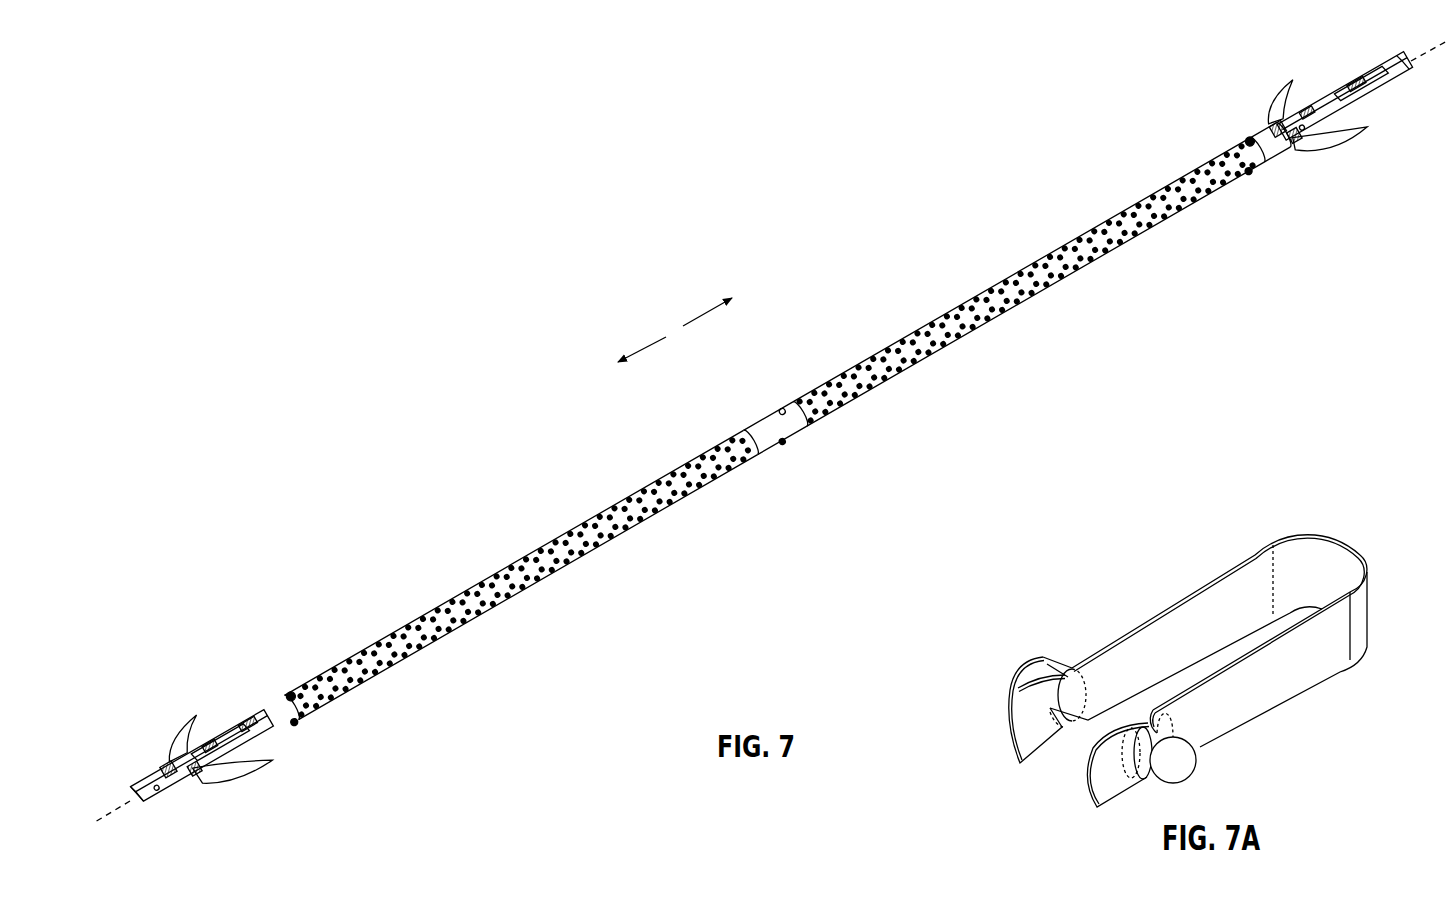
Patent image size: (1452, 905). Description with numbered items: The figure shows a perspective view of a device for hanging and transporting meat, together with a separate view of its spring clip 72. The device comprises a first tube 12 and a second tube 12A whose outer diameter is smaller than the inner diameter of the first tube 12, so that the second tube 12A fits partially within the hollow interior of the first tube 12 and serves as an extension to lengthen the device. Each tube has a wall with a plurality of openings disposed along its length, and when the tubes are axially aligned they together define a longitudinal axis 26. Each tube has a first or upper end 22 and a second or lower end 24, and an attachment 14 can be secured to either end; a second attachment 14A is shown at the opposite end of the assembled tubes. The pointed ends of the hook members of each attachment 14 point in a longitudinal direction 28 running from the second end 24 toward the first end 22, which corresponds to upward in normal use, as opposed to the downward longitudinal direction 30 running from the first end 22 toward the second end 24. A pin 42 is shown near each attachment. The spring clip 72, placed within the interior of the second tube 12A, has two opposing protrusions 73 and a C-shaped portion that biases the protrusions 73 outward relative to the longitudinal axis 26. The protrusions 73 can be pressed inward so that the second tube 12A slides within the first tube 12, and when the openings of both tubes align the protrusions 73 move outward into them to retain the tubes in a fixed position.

In FIG. 7, the first tube 12 is at (1030, 287).
In FIG. 7, the second tube 12A is at (513, 576).
In FIG. 7, the attachment 14 is at (1332, 96).
In FIG. 7, the end effector 14A is at (230, 730).
In FIG. 7, the first end 22 is at (1287, 161).
In FIG. 7, the second end 24 is at (779, 455).
In FIG. 7, the longitudinal axis 26 is at (105, 812).
In FIG. 7, the longitudinal direction 28 is at (697, 310).
In FIG. 7, the downward longitudinal direction 30 is at (650, 338).
In FIG. 7, the pin 42 is at (292, 695).
In FIG. 7, the spring clip 72 is at (781, 410).
In FIG. 7A, the spring clip 72 is at (1345, 548).
In FIG. 7A, the protrusions 73 is at (1028, 670).